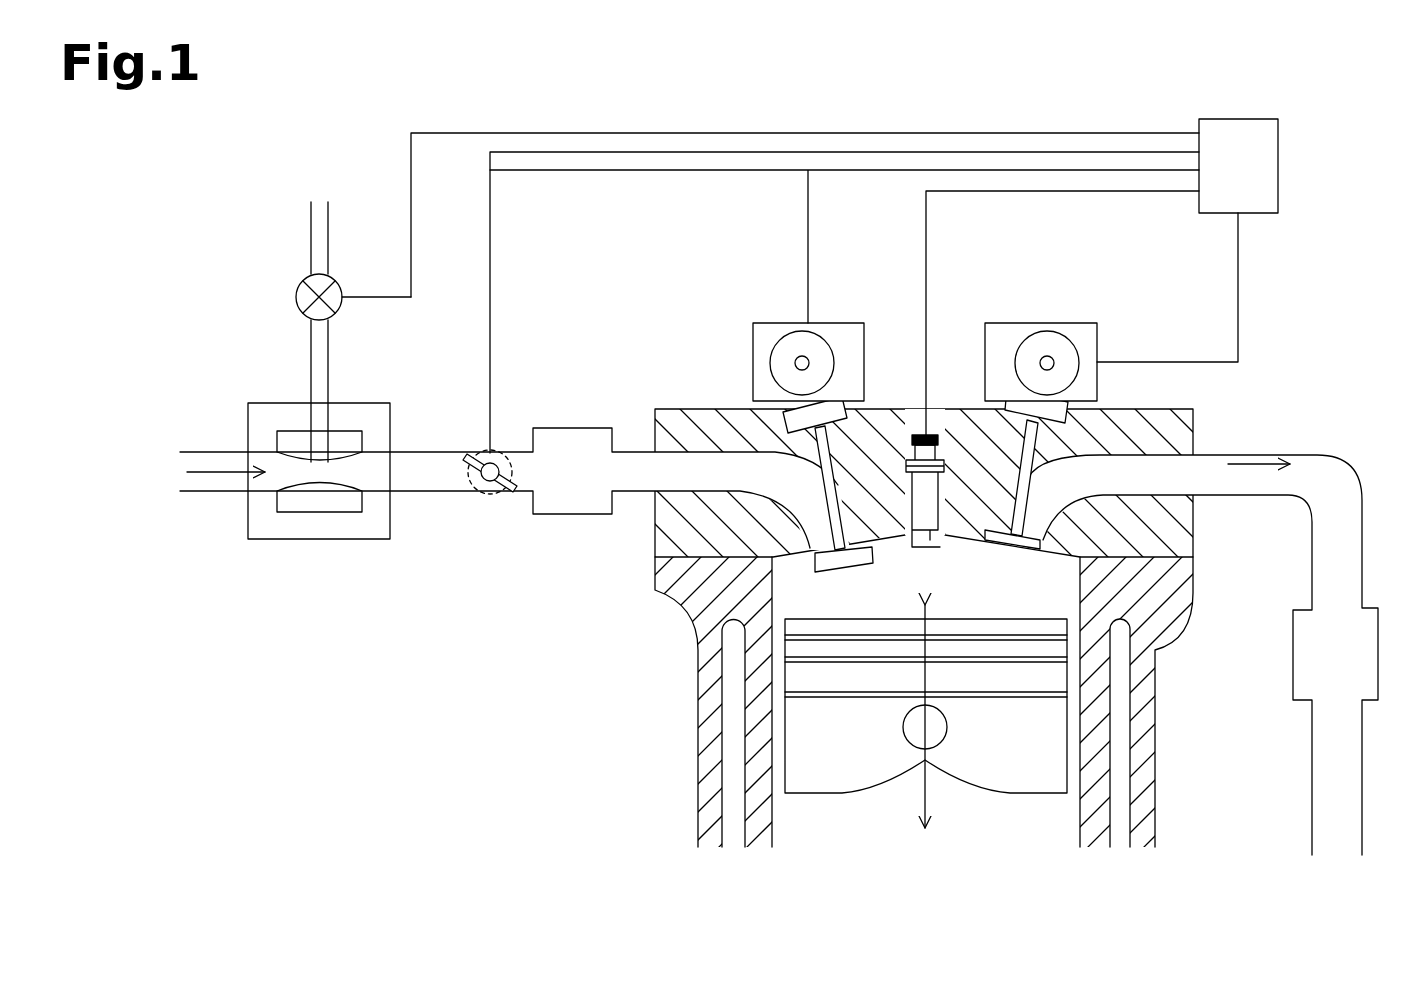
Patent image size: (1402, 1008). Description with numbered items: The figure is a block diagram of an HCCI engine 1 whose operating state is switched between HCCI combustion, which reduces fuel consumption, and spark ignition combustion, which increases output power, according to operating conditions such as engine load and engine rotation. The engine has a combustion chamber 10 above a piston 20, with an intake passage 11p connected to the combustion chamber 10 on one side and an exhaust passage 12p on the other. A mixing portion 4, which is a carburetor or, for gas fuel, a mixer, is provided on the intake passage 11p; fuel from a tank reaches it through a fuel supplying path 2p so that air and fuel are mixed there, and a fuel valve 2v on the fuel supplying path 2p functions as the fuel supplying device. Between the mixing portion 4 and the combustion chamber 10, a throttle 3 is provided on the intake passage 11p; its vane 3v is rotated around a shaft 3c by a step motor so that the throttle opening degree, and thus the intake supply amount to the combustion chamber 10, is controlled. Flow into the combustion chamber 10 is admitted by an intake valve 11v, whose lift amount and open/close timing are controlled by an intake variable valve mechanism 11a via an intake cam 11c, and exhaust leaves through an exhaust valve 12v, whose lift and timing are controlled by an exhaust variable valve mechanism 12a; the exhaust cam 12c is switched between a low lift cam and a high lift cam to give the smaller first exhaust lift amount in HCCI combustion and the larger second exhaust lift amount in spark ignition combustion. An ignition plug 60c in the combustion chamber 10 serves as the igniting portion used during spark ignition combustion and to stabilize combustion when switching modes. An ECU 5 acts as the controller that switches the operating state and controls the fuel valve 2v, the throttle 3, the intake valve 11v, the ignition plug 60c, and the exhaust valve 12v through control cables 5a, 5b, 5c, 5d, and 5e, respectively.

The HCCI engine 1 is at (1312, 150).
The fuel supplying path 2p is at (306, 224).
The fuel valve 2v is at (296, 297).
The throttle 3 is at (508, 434).
The shaft 3c is at (490, 483).
The vane 3v is at (520, 491).
The mixing portion 4 is at (268, 540).
The ECU 5 is at (1238, 166).
The control cable 5a is at (1100, 133).
The control cable 5b is at (952, 151).
The control cable 5c is at (878, 176).
The control cable 5d is at (1028, 196).
The control cable 5e is at (1239, 283).
The combustion chamber 10 is at (790, 598).
The intake passage 11p is at (203, 452).
The intake variable valve mechanism 11a is at (770, 322).
The intake cam 11c is at (826, 364).
The intake valve 11v is at (851, 567).
The exhaust passage 12p is at (1227, 452).
The exhaust variable valve mechanism 12a is at (1008, 322).
The exhaust cam 12c is at (1058, 340).
The exhaust valve 12v is at (1010, 544).
The piston 20 is at (1048, 752).
The ignition plug 60c is at (940, 546).